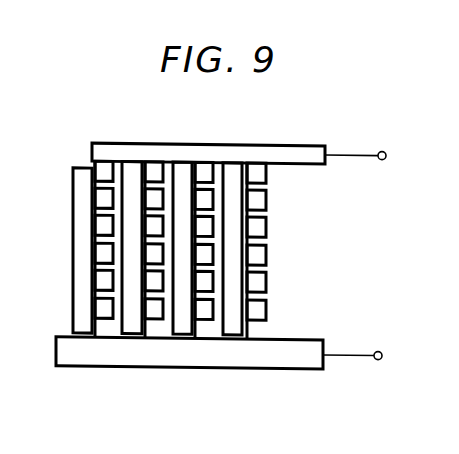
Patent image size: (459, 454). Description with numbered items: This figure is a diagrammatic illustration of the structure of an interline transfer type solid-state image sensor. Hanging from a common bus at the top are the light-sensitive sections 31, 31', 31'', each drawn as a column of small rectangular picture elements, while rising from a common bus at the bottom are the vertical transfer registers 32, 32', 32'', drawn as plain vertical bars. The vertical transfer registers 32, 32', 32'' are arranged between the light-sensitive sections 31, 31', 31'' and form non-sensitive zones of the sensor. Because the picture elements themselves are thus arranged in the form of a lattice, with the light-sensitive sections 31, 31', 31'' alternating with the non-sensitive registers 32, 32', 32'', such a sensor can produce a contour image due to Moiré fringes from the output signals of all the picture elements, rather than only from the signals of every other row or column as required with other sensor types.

The light-sensitive section 31 is at (260, 222).
The light-sensitive section 31' is at (212, 222).
The light-sensitive section 31'' is at (162, 221).
The vertical transfer register 32 is at (84, 286).
The vertical transfer register 32' is at (134, 282).
The vertical transfer register 32'' is at (187, 283).